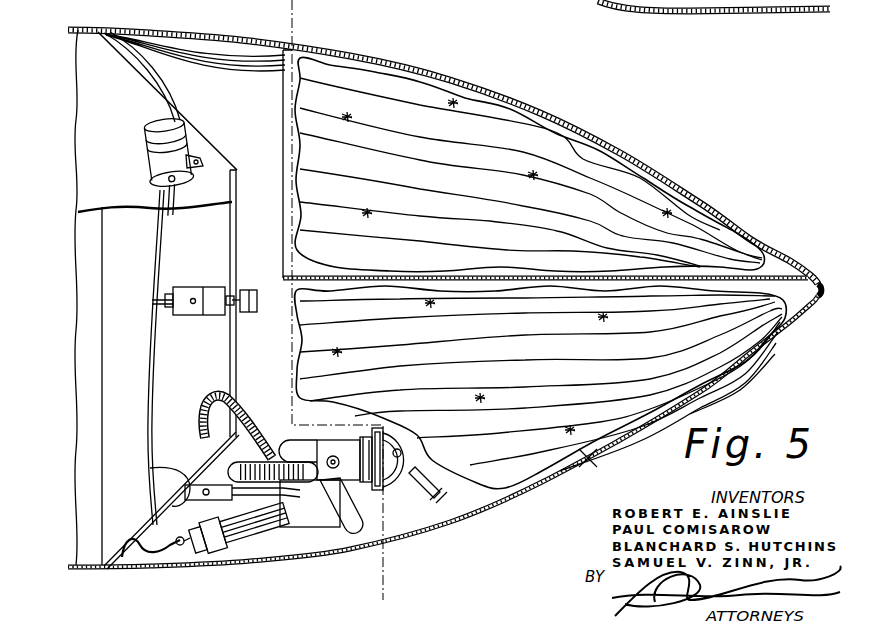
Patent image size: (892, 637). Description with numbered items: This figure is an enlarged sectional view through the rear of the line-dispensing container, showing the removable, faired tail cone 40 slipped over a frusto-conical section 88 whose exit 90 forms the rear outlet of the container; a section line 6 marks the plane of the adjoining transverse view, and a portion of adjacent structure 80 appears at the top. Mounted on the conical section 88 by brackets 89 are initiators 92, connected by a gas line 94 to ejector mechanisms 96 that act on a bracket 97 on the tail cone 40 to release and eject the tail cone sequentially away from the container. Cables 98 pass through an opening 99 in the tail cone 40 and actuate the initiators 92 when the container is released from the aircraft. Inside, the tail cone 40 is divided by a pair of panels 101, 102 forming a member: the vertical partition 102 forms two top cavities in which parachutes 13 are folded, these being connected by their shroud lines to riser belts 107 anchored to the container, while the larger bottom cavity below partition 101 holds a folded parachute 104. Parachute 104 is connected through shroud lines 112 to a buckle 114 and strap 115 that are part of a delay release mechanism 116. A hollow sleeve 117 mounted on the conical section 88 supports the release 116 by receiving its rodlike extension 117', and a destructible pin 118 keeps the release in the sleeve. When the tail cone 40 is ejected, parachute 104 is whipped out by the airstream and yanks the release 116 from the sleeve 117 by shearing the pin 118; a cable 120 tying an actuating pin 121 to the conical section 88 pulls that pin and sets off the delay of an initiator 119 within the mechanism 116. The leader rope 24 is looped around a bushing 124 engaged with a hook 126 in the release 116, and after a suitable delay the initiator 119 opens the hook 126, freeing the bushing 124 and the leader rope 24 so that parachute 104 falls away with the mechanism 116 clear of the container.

The section line 6- 6 is at (300, 7).
The parachutes 13 is at (702, 212).
The leader rope 24 is at (227, 396).
The tail cone 40 is at (495, 85).
The adjacent body section 80 is at (600, 6).
The frusto-conical section 88 is at (200, 133).
The brackets 89 is at (200, 162).
The exit 90 is at (238, 230).
The initiators 92 is at (152, 135).
The gas line 94 is at (160, 255).
The ejector mechanisms 96 is at (186, 316).
The bracket 97 is at (245, 313).
The cables 98 is at (145, 70).
The opening 99 is at (160, 30).
The panel 101 is at (784, 265).
The panel 102 is at (283, 236).
The parachute 104 is at (590, 470).
The riser belts 107 is at (258, 18).
The shroud lines 112 is at (433, 489).
The buckle 114 is at (393, 490).
The strap 115 is at (338, 448).
The delay release mechanism 116 is at (317, 542).
The hollow sleeve 117 is at (151, 483).
The rodlike extension 117' is at (303, 535).
The destructible pin 118 is at (185, 501).
The initiator 119 is at (238, 545).
The cable 120 is at (147, 558).
The actuating pin 121 is at (185, 550).
The bushing 124 is at (262, 461).
The hook 126 is at (288, 440).